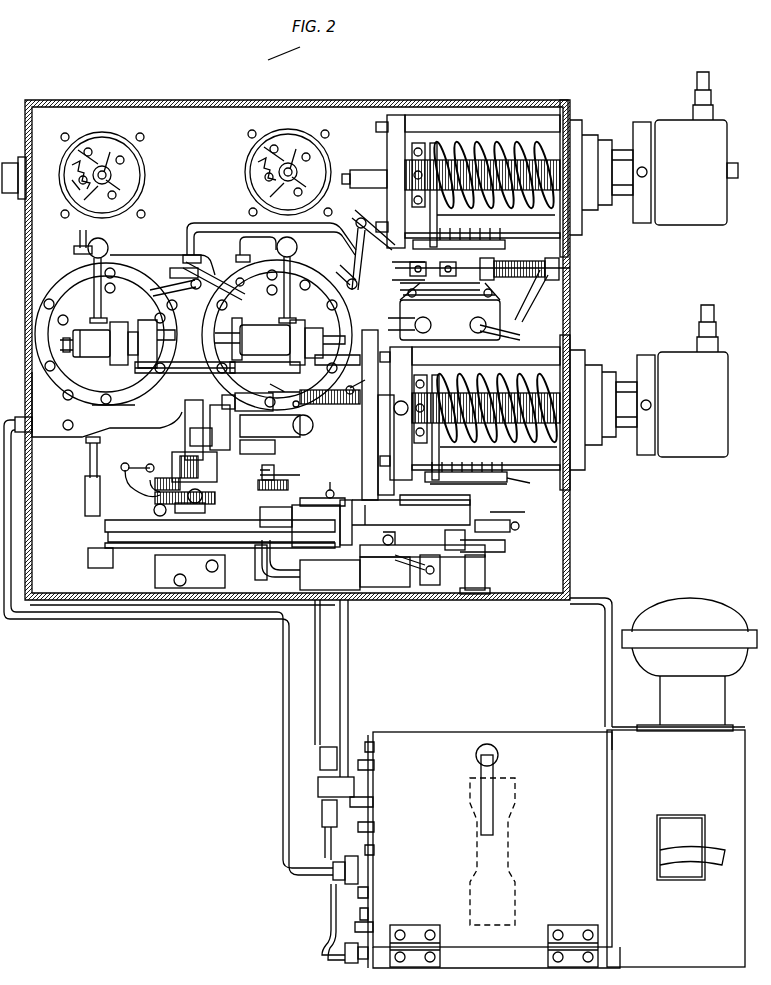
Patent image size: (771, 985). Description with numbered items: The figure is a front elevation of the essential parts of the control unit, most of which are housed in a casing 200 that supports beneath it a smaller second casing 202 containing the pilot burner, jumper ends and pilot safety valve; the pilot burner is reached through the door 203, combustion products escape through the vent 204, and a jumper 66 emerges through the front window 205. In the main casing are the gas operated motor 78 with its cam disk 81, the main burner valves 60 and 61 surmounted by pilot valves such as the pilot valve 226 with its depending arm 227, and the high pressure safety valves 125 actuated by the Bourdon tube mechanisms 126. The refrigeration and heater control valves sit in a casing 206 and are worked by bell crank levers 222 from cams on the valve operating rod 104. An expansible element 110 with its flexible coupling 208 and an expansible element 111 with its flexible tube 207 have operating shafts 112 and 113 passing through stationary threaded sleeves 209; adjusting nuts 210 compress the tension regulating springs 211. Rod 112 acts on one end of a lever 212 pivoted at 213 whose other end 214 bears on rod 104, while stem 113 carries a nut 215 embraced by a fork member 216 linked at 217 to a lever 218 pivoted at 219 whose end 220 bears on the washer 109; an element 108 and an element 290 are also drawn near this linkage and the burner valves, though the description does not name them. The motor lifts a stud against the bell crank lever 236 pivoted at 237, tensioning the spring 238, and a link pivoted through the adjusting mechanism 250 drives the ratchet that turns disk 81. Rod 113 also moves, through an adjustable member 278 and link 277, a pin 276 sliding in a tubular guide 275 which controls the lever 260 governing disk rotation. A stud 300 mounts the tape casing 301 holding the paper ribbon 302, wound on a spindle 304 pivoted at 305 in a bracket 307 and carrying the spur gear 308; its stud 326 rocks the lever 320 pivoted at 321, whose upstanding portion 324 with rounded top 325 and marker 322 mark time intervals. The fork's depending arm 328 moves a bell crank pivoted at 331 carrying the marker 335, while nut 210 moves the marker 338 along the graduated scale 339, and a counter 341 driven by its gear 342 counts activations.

The main burner valve 60 is at (78, 305).
The main burner valve 61 is at (240, 295).
The jumper 66 is at (665, 852).
The motor 78 is at (240, 572).
The disk 81 is at (195, 460).
The valve operating rod 104 is at (306, 326).
The spring link 108 is at (535, 268).
The washer 109 is at (395, 265).
The expansible element 110 is at (672, 358).
The expansible element 111 is at (662, 130).
The operating shaft 112 is at (366, 153).
The operating shaft 113 is at (362, 445).
The high pressure safety valve 125 is at (98, 150).
The pressure-responsive operating mechanism 126 is at (138, 162).
The casing 200 is at (575, 555).
The second casing 202 is at (610, 728).
The door 203 is at (445, 730).
The vent 204 is at (690, 625).
The front window 205 is at (685, 820).
The casing 206 is at (515, 328).
The flexible tube 207 is at (712, 73).
The flexible coupling 208 is at (716, 312).
The stationary threaded sleeve 209 is at (475, 140).
The adjusting nut 210 is at (418, 143).
The tension regulating spring 211 is at (520, 140).
The lever 212 is at (366, 208).
The pivot 213 is at (380, 206).
The lever end 214 is at (340, 272).
The nut 215 is at (365, 460).
The fork member 216 is at (318, 392).
The link pivot 217 is at (372, 390).
The lever 218 is at (322, 360).
The pivot 219 is at (320, 332).
The lever end 220 is at (435, 228).
The bell crank lever 222 is at (428, 308).
The pilot valve 226 is at (90, 348).
The depending arm 227 is at (135, 365).
The bell crank lever 236 is at (136, 495).
The pivot 237 is at (163, 538).
The spring 238 is at (124, 468).
The adjusting mechanism 250 is at (145, 470).
The lever 260 is at (222, 440).
The tubular guide 275 is at (268, 405).
The pin 276 is at (290, 386).
The link 277 is at (286, 430).
The adjustable member 278 is at (282, 450).
The arm 290 is at (160, 392).
The stud 300 is at (478, 568).
The tape casing 301 is at (520, 516).
The paper ribbon 302 is at (530, 508).
The spindle 304 is at (330, 572).
The spindle pivot 305 is at (282, 478).
The bracket 307 is at (270, 550).
The spur gear 308 is at (310, 512).
The lever 320 is at (378, 565).
The pivot 321 is at (395, 535).
The marker 322 is at (438, 560).
The upstanding portion 324 is at (338, 548).
The rounded top surface 325 is at (342, 514).
The stud 326 is at (336, 480).
The depending arm 328 is at (352, 500).
The pivot 331 is at (445, 504).
The marker 335 is at (500, 548).
The marker 338 is at (470, 455).
The graduated scale 339 is at (510, 480).
The counter 341 is at (178, 468).
The gear 342 is at (195, 508).